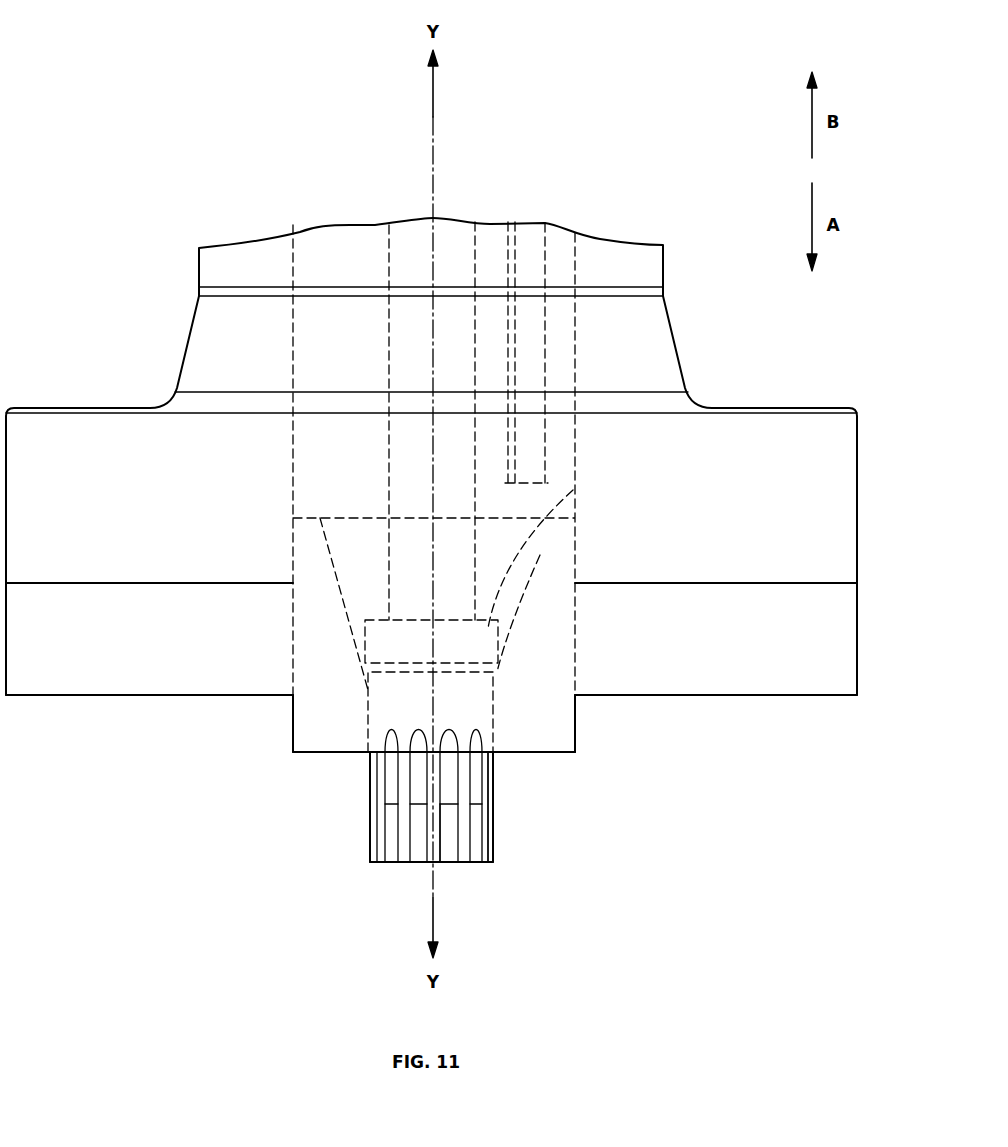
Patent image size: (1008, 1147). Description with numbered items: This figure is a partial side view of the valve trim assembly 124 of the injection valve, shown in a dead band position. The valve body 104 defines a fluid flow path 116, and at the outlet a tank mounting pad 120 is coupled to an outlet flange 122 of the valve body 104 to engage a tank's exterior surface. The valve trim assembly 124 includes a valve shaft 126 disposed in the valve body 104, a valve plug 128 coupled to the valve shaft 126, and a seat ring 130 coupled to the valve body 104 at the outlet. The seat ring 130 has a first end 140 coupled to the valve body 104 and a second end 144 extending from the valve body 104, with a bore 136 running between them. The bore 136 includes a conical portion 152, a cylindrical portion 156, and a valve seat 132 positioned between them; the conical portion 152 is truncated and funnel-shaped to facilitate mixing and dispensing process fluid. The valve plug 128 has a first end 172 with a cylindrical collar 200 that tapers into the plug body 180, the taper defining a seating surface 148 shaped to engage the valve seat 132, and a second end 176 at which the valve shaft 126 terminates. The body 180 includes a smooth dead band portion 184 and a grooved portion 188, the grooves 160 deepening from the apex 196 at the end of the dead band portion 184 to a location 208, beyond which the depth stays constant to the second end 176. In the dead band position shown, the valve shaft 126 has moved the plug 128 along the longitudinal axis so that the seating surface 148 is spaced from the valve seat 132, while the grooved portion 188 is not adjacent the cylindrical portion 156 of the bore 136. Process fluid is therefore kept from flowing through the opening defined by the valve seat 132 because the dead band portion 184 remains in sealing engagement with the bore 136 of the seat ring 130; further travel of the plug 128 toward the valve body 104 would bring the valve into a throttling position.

The valve body 104 is at (778, 432).
The fluid flow path 116 is at (335, 255).
The tank mounting pad 120 is at (840, 655).
The outlet flange 122 is at (840, 452).
The valve trim assembly 124 is at (140, 168).
The valve shaft 126 is at (477, 240).
The valve plug 128 is at (390, 834).
The seat ring 130 is at (557, 654).
The valve seat 132 is at (500, 670).
The bore 136 is at (345, 556).
The first end 140 is at (320, 518).
The second end 144 is at (555, 742).
The seating surface 148 is at (365, 688).
The conical portion 152 is at (535, 585).
The cylindrical portion 156 is at (495, 722).
The grooves 160 is at (450, 847).
The first end 172 is at (572, 492).
The second end 176 is at (480, 863).
The body 180 is at (376, 752).
The dead band portion 184 is at (372, 722).
The grooved portion 188 is at (480, 837).
The apex 196 is at (442, 742).
The cylindrical collar 200 is at (532, 560).
The location 208 is at (472, 800).